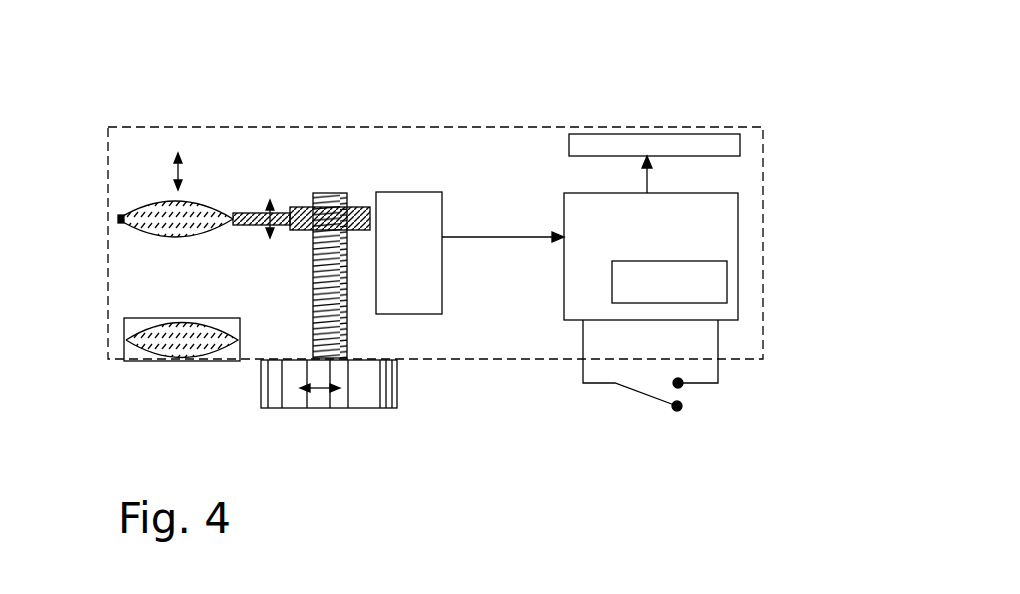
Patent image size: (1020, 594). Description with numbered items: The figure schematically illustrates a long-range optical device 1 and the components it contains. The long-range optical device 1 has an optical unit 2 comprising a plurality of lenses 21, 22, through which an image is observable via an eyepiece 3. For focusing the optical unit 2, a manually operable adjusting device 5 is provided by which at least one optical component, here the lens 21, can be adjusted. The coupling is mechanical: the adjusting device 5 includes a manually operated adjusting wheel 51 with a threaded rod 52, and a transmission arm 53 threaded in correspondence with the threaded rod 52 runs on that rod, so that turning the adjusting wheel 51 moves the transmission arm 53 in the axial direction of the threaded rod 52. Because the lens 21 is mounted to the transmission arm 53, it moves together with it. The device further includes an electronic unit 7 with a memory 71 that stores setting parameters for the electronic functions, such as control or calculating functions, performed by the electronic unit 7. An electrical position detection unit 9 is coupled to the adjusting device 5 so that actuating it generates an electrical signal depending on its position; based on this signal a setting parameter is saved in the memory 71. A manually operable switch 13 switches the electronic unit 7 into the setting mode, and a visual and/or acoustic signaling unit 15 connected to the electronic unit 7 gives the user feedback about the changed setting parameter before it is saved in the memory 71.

The long-range optical device 1 is at (367, 126).
The optical unit 2 is at (156, 393).
The eyepiece 3 is at (138, 318).
The manually operable adjusting device 5 is at (289, 178).
The electronic unit 7 is at (564, 200).
The electrical position detection unit 9 is at (442, 297).
The manually operable switch 13 is at (628, 390).
The signaling unit 15 is at (618, 133).
The lens 21 is at (162, 198).
The lens 22 is at (125, 360).
The adjusting wheel 51 is at (357, 408).
The threaded rod 52 is at (347, 315).
The transmission arm 53 is at (260, 212).
The memory 71 is at (703, 303).